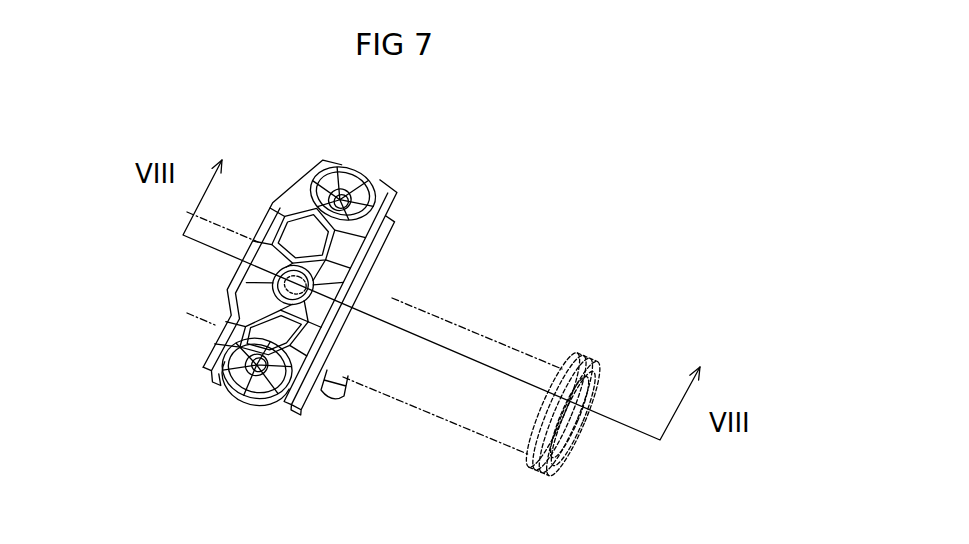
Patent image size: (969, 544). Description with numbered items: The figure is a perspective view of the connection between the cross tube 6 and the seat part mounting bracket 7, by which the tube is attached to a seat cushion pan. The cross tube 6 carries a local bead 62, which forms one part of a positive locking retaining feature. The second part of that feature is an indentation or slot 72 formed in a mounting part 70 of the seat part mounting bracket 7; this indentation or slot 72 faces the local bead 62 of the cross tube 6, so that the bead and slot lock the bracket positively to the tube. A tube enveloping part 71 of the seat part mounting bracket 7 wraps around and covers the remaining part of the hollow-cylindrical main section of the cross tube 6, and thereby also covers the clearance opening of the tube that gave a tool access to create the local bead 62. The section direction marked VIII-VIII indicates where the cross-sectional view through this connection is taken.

The cross tube 6 is at (462, 423).
The seat part mounting bracket 7 is at (299, 287).
The mounting part 70 is at (320, 190).
The tube enveloping part 71 is at (330, 398).
The indentation or slot 72 is at (285, 290).
The local bead 62 is at (312, 279).